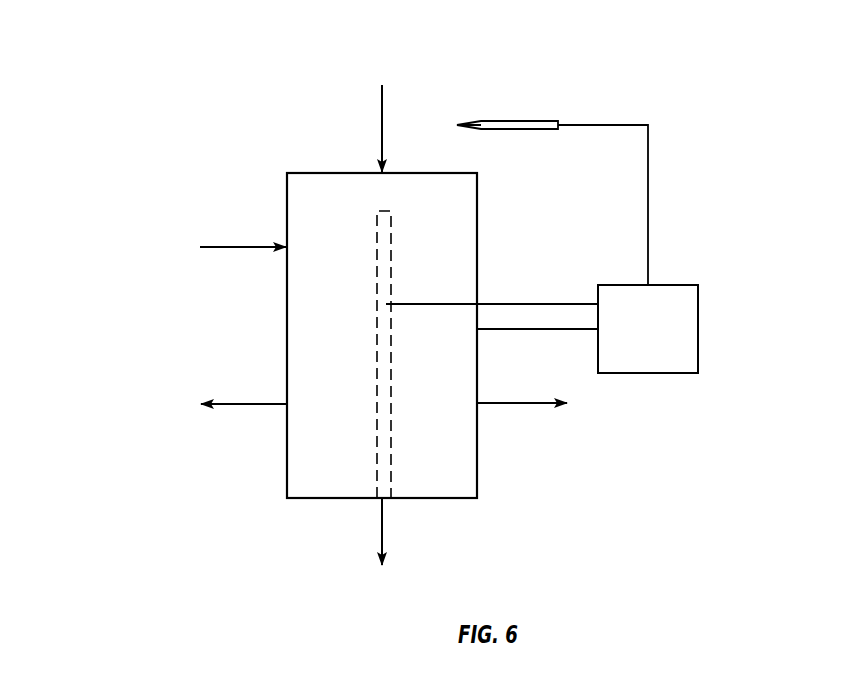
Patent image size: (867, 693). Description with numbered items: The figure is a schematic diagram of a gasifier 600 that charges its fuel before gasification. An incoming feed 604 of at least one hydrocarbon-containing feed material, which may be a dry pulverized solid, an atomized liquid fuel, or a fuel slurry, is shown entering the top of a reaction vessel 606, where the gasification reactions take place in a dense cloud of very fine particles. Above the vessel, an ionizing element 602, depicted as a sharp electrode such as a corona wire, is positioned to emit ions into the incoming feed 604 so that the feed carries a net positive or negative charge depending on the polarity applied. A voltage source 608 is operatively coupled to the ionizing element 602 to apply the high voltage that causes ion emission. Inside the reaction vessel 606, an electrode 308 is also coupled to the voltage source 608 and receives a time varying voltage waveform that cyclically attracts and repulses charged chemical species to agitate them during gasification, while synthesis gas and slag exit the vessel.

The gasifier 600 is at (668, 76).
The ionizing element 602 is at (524, 125).
The incoming feed 604 is at (382, 103).
The reaction vessel 606 is at (478, 284).
The voltage source 608 is at (666, 365).
The electrode 308 is at (386, 260).